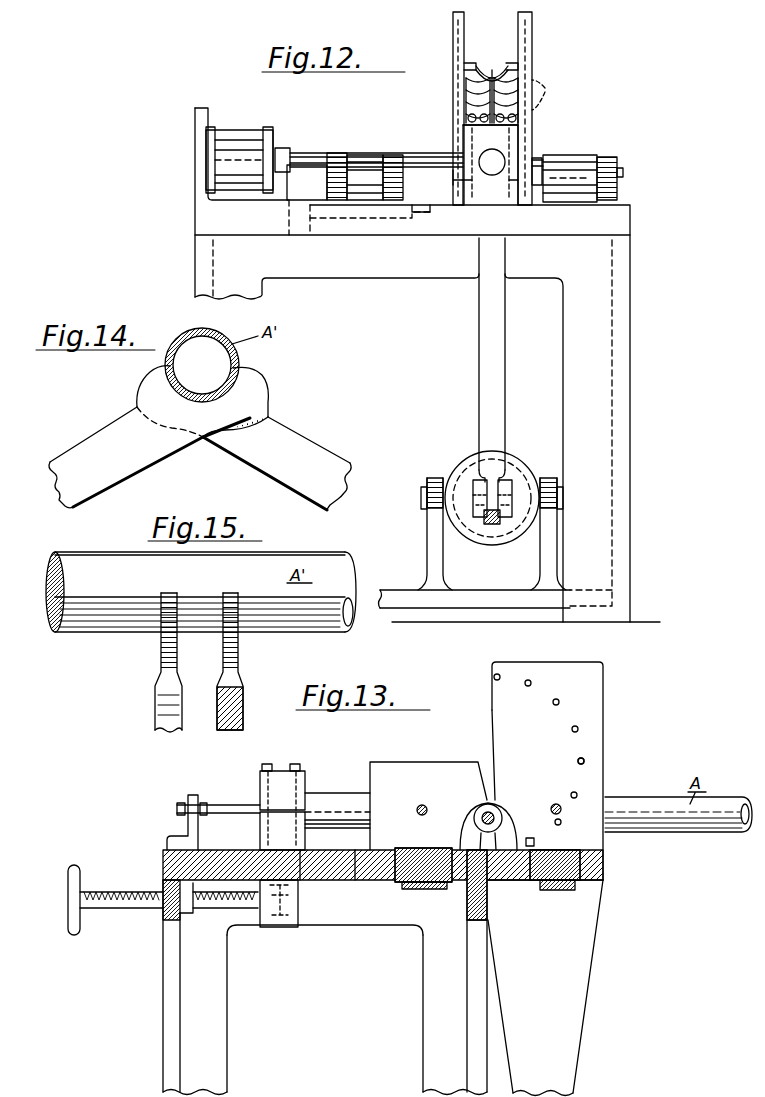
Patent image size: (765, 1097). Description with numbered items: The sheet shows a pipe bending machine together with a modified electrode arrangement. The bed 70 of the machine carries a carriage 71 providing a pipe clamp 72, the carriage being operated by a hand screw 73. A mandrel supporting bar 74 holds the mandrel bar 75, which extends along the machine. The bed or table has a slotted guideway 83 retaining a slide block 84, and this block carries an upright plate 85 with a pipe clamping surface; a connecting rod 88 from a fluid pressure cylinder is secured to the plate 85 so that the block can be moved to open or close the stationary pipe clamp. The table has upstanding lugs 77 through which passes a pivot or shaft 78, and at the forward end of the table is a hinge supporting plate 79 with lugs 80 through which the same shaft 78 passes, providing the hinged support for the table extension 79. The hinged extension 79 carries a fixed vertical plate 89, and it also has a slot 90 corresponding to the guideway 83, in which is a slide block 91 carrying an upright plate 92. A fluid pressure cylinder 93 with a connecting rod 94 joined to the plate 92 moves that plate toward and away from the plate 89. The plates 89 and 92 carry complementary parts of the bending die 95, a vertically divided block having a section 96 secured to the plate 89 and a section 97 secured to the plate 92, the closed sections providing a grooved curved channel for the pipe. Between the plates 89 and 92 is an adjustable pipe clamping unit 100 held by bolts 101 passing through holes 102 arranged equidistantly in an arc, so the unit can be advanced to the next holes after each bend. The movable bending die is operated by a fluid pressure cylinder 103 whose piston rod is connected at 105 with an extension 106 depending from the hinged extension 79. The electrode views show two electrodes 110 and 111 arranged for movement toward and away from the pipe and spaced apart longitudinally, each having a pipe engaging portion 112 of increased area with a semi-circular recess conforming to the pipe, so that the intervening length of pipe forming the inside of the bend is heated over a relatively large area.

In FIG. 13, the bed 70 is at (358, 874).
In FIG. 13, the carriage 71 is at (259, 842).
In FIG. 13, the pipe clamp 72 is at (260, 780).
In FIG. 13, the hand screw 73 is at (136, 907).
In FIG. 13, the mandrel supporting bar 74 is at (194, 796).
In FIG. 13, the mandrel bar 75 is at (232, 802).
In FIG. 12, the upstanding lugs 77 is at (396, 162).
In FIG. 13, the upstanding lugs 77 is at (470, 820).
In FIG. 12, the pivot or shaft 78 is at (640, 172).
In FIG. 13, the pivot or shaft 78 is at (491, 814).
In FIG. 12, the hinge supporting plate 79 is at (618, 218).
In FIG. 13, the hinge supporting plate 79 is at (605, 864).
In FIG. 12, the lugs 80 is at (362, 165).
In FIG. 13, the lugs 80 is at (505, 829).
In FIG. 13, the slotted guideway 83 is at (396, 872).
In FIG. 13, the slide block 84 is at (432, 888).
In FIG. 13, the upright plate 85 is at (428, 806).
In FIG. 13, the connecting rod 88 is at (420, 815).
In FIG. 12, the fixed vertical plate 89 is at (533, 47).
In FIG. 12, the slot 90 is at (302, 224).
In FIG. 13, the slot 90 is at (604, 880).
In FIG. 12, the slide block 91 is at (426, 214).
In FIG. 13, the slide block 91 is at (560, 885).
In FIG. 12, the upright plate 92 is at (455, 42).
In FIG. 13, the upright plate 92 is at (604, 705).
In FIG. 12, the fluid pressure cylinder 93 is at (236, 142).
In FIG. 12, the connecting rod 94 is at (320, 151).
In FIG. 13, the connecting rod 94 is at (562, 815).
In FIG. 12, the bending die 95 is at (492, 70).
In FIG. 12, the die section 96 is at (520, 74).
In FIG. 12, the die section 97 is at (470, 84).
In FIG. 12, the adjustable pipe clamping unit 100 is at (504, 142).
In FIG. 12, the bolts 101 is at (452, 187).
In FIG. 12, the holes 102 is at (555, 95).
In FIG. 13, the holes 102 is at (578, 730).
In FIG. 12, the fluid pressure cylinder 103 is at (509, 462).
In FIG. 12, the connection 105 is at (484, 518).
In FIG. 12, the extension 106 is at (484, 405).
In FIG. 13, the extension 106 is at (580, 1036).
In FIG. 14, the electrode 110 is at (320, 475).
In FIG. 15, the electrode 110 is at (243, 698).
In FIG. 14, the electrode 111 is at (112, 473).
In FIG. 15, the electrode 111 is at (155, 690).
In FIG. 14, the pipe engaging portions 112 is at (250, 380).
In FIG. 15, the pipe engaging portions 112 is at (230, 615).